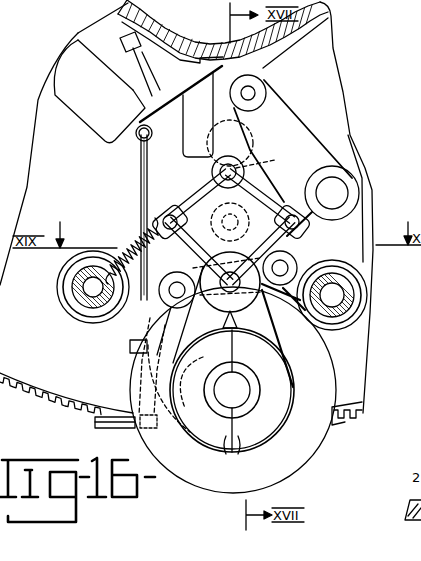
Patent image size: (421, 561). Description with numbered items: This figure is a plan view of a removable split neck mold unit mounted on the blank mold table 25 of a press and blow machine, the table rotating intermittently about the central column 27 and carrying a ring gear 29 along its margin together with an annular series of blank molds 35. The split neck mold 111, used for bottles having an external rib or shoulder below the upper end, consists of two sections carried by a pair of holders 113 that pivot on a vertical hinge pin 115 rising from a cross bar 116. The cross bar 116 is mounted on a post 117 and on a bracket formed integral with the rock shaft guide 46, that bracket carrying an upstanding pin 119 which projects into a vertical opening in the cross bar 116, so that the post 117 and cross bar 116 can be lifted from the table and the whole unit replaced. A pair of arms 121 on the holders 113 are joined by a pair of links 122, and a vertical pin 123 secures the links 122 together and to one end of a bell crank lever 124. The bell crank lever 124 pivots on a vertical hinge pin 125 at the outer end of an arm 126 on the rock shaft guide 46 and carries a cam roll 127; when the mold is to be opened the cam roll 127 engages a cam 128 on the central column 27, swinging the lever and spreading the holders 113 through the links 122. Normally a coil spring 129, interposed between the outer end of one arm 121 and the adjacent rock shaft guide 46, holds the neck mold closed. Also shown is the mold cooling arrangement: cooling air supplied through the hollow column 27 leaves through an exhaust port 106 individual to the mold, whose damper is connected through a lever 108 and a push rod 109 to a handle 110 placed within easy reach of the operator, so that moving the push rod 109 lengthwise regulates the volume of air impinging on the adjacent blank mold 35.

The blank mold table 25 is at (72, 369).
The column 27 is at (330, 12).
The ring gear 29 is at (53, 407).
The blank mold 35 is at (313, 440).
The rock shaft guide 46 is at (80, 308).
The exhaust port 106 is at (103, 117).
The lever 108 is at (168, 130).
The push rod 109 is at (140, 163).
The handle 110 is at (117, 428).
The split neck mold 111 is at (297, 383).
The holder 113 is at (232, 402).
The vertical hinge pin 115 is at (231, 283).
The cross bar 116 is at (293, 303).
The post 117 is at (175, 295).
The upstanding pin 119 is at (283, 268).
The arm 121 is at (197, 248).
The link 122 is at (200, 188).
The vertical pin 123 is at (232, 163).
The bell crank lever 124 is at (282, 115).
The vertical hinge pin 125 is at (334, 190).
The arm 126 is at (357, 258).
The cam roll 127 is at (265, 67).
The cam 128 is at (88, 40).
The coil spring 129 is at (138, 228).